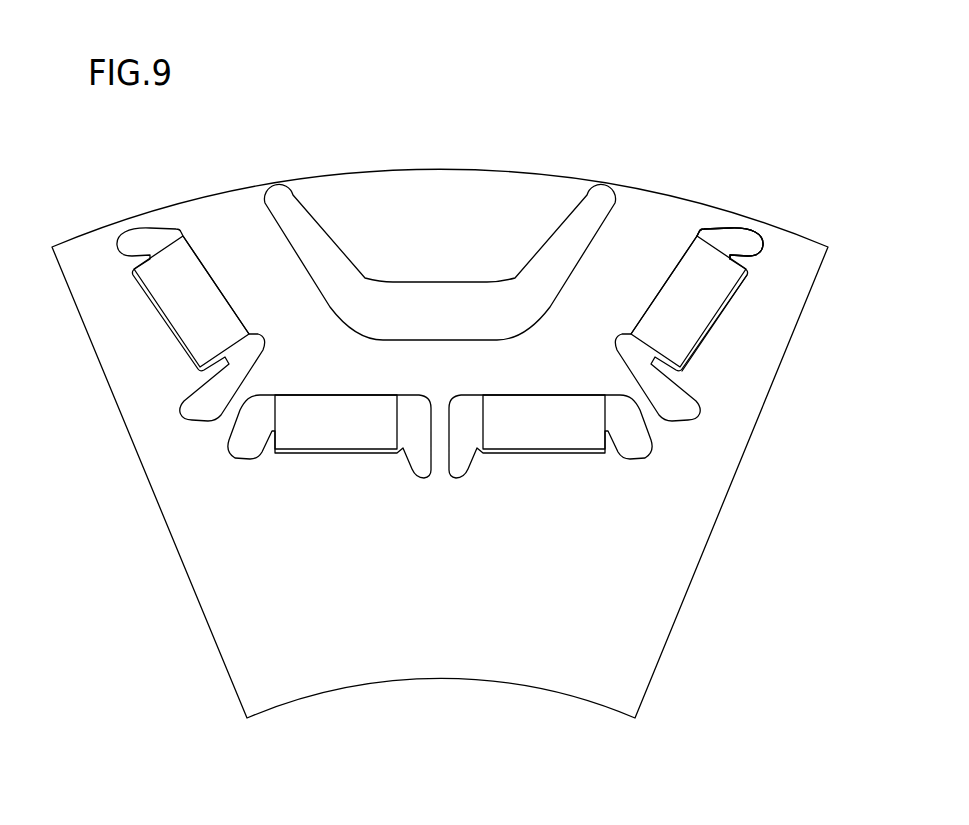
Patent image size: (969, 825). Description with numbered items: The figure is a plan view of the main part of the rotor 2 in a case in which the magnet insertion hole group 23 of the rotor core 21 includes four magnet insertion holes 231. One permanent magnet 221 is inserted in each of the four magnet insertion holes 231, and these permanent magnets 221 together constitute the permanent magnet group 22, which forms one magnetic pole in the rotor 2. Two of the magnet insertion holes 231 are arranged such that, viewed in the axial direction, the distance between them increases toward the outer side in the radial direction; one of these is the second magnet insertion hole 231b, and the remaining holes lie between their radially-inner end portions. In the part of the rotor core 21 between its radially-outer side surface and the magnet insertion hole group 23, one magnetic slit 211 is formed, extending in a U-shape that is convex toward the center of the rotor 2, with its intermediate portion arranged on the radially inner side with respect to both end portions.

The rotor 2 is at (57, 243).
The rotor core 21 is at (475, 192).
The magnetic slit 211 is at (363, 288).
The permanent magnet group 22 is at (695, 257).
The magnet insertion hole group 23 is at (686, 258).
The permanent magnet 221 is at (193, 330).
The magnet insertion hole 231 is at (167, 236).
The second magnet insertion hole 231b is at (656, 195).